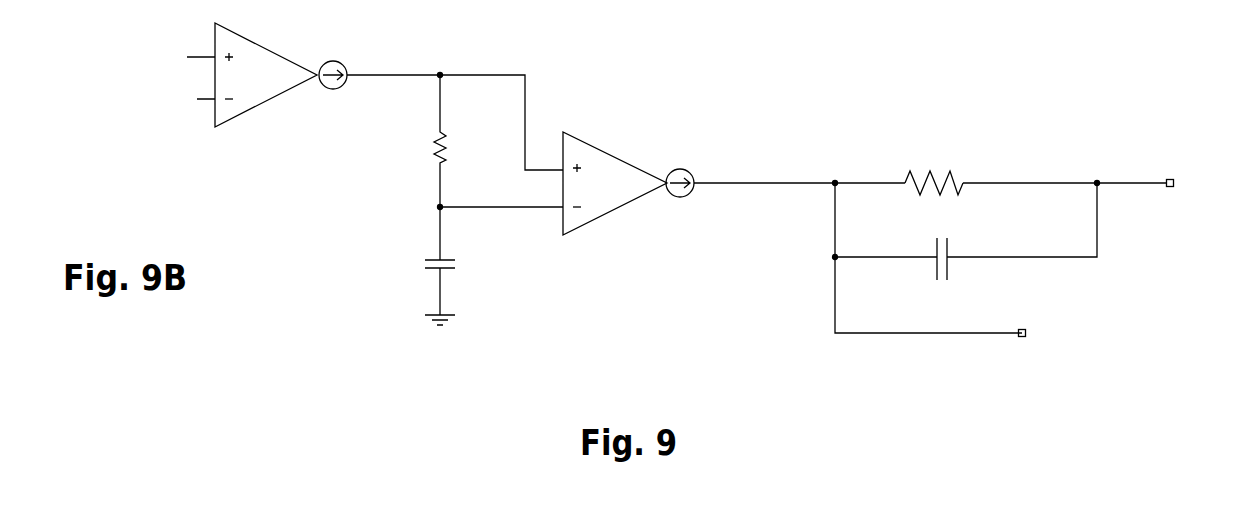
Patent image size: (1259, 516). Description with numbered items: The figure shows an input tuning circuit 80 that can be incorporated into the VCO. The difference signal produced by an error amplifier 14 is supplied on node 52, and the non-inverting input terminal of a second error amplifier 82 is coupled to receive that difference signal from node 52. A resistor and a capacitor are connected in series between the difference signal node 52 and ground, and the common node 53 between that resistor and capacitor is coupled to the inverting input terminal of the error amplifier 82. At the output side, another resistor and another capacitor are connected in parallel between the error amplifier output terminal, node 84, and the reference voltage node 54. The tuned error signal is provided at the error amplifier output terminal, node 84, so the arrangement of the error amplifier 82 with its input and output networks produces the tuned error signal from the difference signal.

The error amplifier 14 is at (265, 104).
The difference signal node 52 is at (440, 75).
The common node 53 is at (440, 207).
The input tuning circuit 80 is at (788, 65).
The error amplifier 82 is at (590, 224).
The error amplifier output terminal 84 is at (835, 183).
The reference voltage node 54 is at (1125, 183).